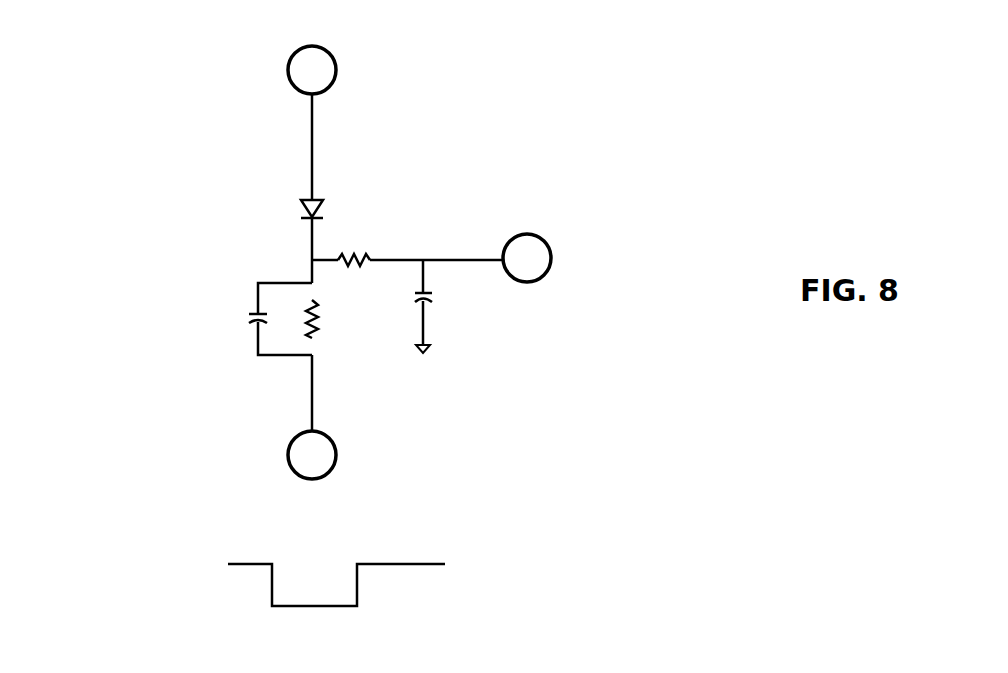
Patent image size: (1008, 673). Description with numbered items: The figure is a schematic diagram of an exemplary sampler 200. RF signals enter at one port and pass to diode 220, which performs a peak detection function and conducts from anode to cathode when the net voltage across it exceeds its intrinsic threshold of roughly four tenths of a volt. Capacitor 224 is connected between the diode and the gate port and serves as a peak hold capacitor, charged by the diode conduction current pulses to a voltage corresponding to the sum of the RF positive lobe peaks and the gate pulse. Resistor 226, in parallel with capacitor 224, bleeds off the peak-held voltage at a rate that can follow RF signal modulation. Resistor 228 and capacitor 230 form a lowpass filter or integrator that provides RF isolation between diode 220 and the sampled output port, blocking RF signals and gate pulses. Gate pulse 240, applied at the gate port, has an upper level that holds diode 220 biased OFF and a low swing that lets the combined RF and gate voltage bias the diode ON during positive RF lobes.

The sampler 200 is at (122, 143).
The diode 220 is at (300, 205).
The capacitor 224 is at (242, 320).
The resistor 226 is at (320, 323).
The resistor 228 is at (358, 252).
The capacitor 230 is at (440, 297).
The gate pulse 240 is at (252, 563).